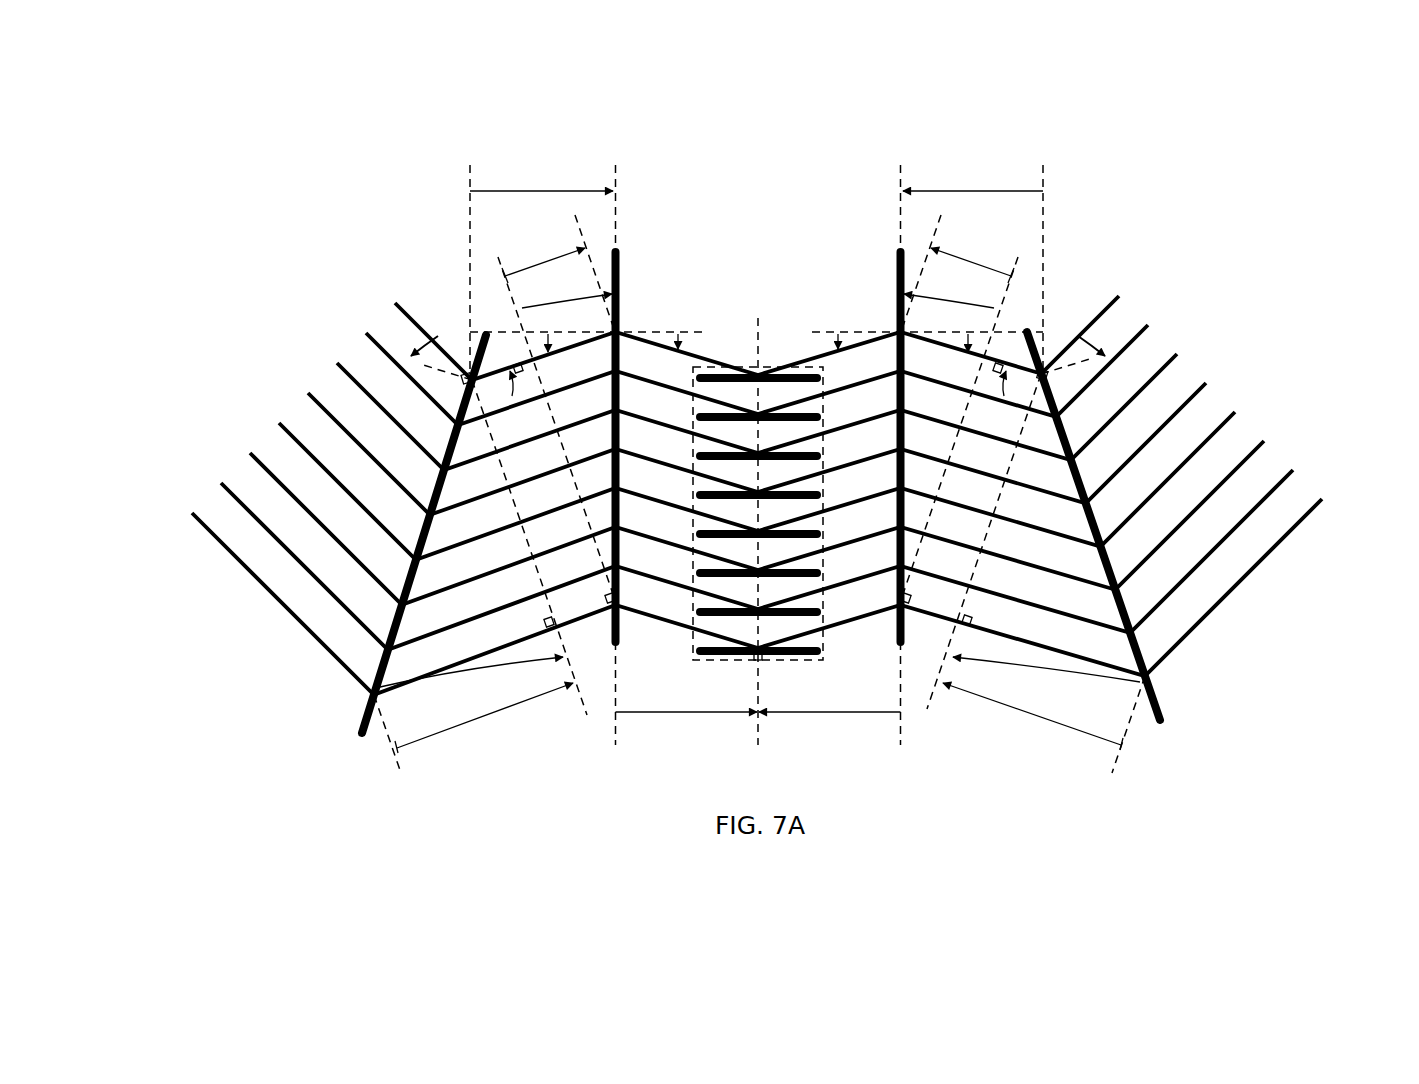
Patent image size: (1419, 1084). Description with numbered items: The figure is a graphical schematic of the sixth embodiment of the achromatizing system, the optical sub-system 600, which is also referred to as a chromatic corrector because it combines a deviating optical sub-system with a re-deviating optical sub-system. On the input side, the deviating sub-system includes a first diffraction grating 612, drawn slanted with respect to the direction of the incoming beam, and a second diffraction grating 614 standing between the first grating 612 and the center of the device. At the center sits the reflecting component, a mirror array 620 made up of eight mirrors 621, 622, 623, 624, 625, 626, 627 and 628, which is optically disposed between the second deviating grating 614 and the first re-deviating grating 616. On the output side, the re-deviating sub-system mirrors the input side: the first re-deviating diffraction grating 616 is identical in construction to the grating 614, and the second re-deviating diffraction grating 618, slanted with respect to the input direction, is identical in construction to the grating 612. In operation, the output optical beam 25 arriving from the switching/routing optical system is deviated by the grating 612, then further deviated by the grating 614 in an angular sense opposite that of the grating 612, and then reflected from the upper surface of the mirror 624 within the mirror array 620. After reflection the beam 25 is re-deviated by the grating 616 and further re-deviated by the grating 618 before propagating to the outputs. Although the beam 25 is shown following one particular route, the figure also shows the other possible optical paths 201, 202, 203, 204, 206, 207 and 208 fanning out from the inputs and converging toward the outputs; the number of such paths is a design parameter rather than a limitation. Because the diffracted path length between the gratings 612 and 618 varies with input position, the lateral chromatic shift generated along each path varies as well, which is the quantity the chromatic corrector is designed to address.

The optical sub-system 600 is at (184, 270).
The optical path 201 is at (405, 312).
The optical path 202 is at (379, 345).
The optical path 203 is at (351, 377).
The output optical beam 25 is at (328, 413).
The optical path 204 is at (302, 446).
The optical path 206 is at (274, 477).
The optical path 207 is at (246, 508).
The optical path 208 is at (218, 539).
The first deviating diffraction grating 612 is at (368, 718).
The second deviating diffraction grating 614 is at (619, 266).
The first re-deviating diffraction grating 616 is at (897, 266).
The second re-deviating diffraction grating 618 is at (1160, 704).
The mirror array 620 is at (738, 372).
The mirror 621 is at (702, 392).
The mirror 622 is at (821, 418).
The mirror 623 is at (821, 457).
The mirror 624 is at (821, 496).
The mirror 625 is at (821, 535).
The mirror 626 is at (821, 574).
The mirror 627 is at (821, 613).
The mirror 628 is at (821, 652).